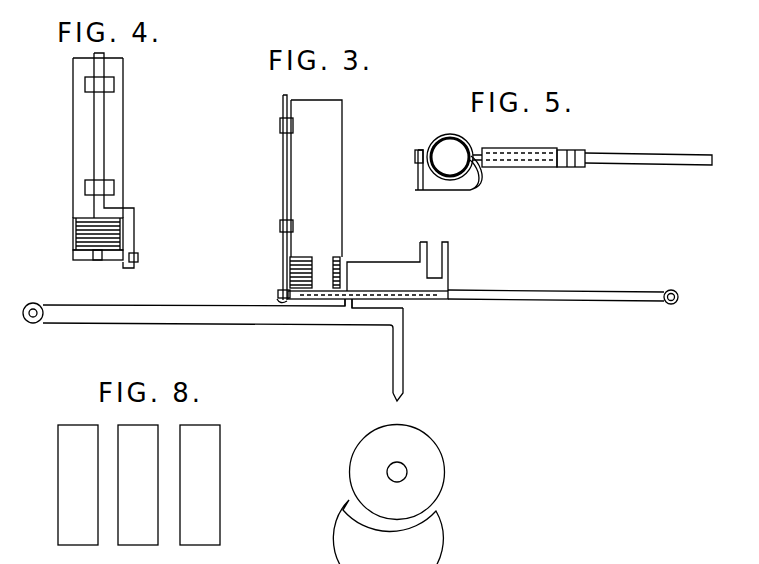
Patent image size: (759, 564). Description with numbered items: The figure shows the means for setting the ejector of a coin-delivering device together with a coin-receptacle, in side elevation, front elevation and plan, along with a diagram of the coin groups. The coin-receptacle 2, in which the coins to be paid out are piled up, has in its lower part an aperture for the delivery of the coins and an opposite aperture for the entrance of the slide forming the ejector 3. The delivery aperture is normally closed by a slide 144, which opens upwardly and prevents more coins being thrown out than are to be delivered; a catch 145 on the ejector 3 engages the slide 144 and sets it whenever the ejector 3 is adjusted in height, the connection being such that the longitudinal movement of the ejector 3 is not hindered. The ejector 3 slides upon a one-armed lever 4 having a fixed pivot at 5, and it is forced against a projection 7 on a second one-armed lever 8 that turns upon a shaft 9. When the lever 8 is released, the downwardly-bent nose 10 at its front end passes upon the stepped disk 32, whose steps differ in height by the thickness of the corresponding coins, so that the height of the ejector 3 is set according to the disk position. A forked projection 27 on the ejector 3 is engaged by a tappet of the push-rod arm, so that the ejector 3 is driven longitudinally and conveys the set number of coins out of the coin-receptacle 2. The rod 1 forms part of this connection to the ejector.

In FIG. 5, the rod 1 is at (655, 162).
In FIG. 4, the coin-receptacle 2 is at (123, 165).
In FIG. 3, the coin-receptacle 2 is at (336, 165).
In FIG. 8, the coin-receptacle 2 is at (58, 455).
In FIG. 3, the ejector 3 is at (380, 267).
In FIG. 5, the ejector 3 is at (535, 165).
In FIG. 4, the one-armed lever 4 is at (97, 260).
In FIG. 3, the one-armed lever 4 is at (593, 292).
In FIG. 3, the fixed pivot 5 is at (672, 305).
In FIG. 3, the projection 7 is at (352, 306).
In FIG. 3, the one-armed lever 8 is at (203, 316).
In FIG. 3, the shaft 9 is at (35, 323).
In FIG. 3, the downwardly-bent nose 10 is at (400, 384).
In FIG. 3, the forked projection 27 is at (435, 252).
In FIG. 5, the forked projection 27 is at (565, 168).
In FIG. 3, the stepped disk 32 is at (447, 452).
In FIG. 4, the slide 144 is at (102, 141).
In FIG. 3, the slide 144 is at (283, 182).
In FIG. 5, the slide 144 is at (418, 172).
In FIG. 4, the catch 145 is at (138, 257).
In FIG. 3, the catch 145 is at (277, 300).
In FIG. 5, the catch 145 is at (455, 192).